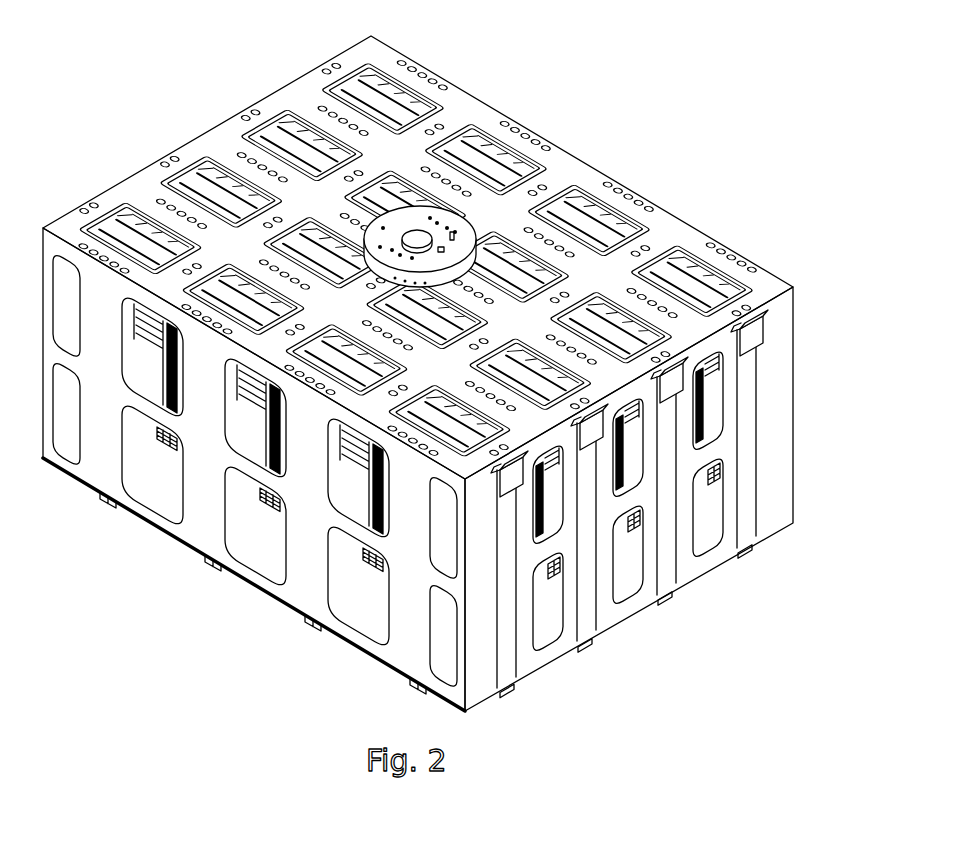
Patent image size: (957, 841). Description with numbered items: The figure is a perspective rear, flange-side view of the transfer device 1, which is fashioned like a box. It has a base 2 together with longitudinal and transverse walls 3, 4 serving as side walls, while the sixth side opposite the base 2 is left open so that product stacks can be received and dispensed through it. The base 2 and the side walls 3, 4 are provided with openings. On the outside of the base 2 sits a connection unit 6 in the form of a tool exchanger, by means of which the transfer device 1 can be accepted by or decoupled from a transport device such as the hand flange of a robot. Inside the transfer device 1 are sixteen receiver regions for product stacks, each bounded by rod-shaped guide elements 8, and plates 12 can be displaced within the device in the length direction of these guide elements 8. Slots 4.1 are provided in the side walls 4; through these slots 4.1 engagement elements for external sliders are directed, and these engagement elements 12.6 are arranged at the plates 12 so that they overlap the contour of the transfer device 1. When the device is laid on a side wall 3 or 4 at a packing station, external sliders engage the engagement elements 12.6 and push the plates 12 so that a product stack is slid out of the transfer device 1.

The transfer device 1 is at (173, 98).
The base 2 is at (673, 232).
The longitudinal wall 3 is at (420, 638).
The transverse wall 4 is at (779, 488).
The slot 4.1 is at (747, 585).
The connection unit 6 is at (477, 227).
The guide element 8 is at (167, 368).
The plate 12 is at (703, 287).
The engagement element 12.6 is at (793, 300).